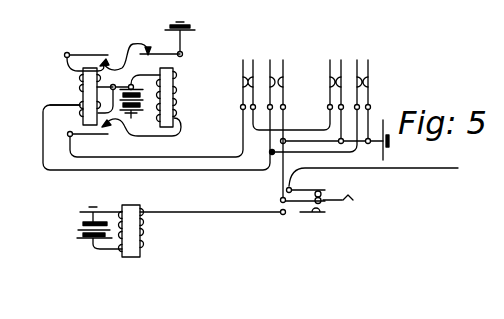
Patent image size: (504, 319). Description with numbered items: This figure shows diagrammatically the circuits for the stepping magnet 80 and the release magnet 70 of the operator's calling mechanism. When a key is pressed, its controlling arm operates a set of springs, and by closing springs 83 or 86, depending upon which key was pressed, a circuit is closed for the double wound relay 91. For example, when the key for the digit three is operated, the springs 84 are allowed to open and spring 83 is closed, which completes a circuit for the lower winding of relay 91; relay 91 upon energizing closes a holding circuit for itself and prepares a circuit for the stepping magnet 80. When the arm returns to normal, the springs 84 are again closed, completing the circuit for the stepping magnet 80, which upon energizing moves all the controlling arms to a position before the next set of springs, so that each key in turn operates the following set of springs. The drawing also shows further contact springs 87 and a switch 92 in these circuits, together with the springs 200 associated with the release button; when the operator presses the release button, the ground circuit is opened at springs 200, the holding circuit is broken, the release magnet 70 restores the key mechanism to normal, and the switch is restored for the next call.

The release magnet 70 is at (132, 242).
The stepping magnet 80 is at (175, 93).
The spring 83 is at (367, 74).
The springs 84 is at (333, 74).
The springs 86 is at (275, 74).
The contact 87 is at (242, 74).
The double wound relay 91 is at (88, 96).
The push button switch 92 is at (324, 203).
The springs 200 is at (312, 189).